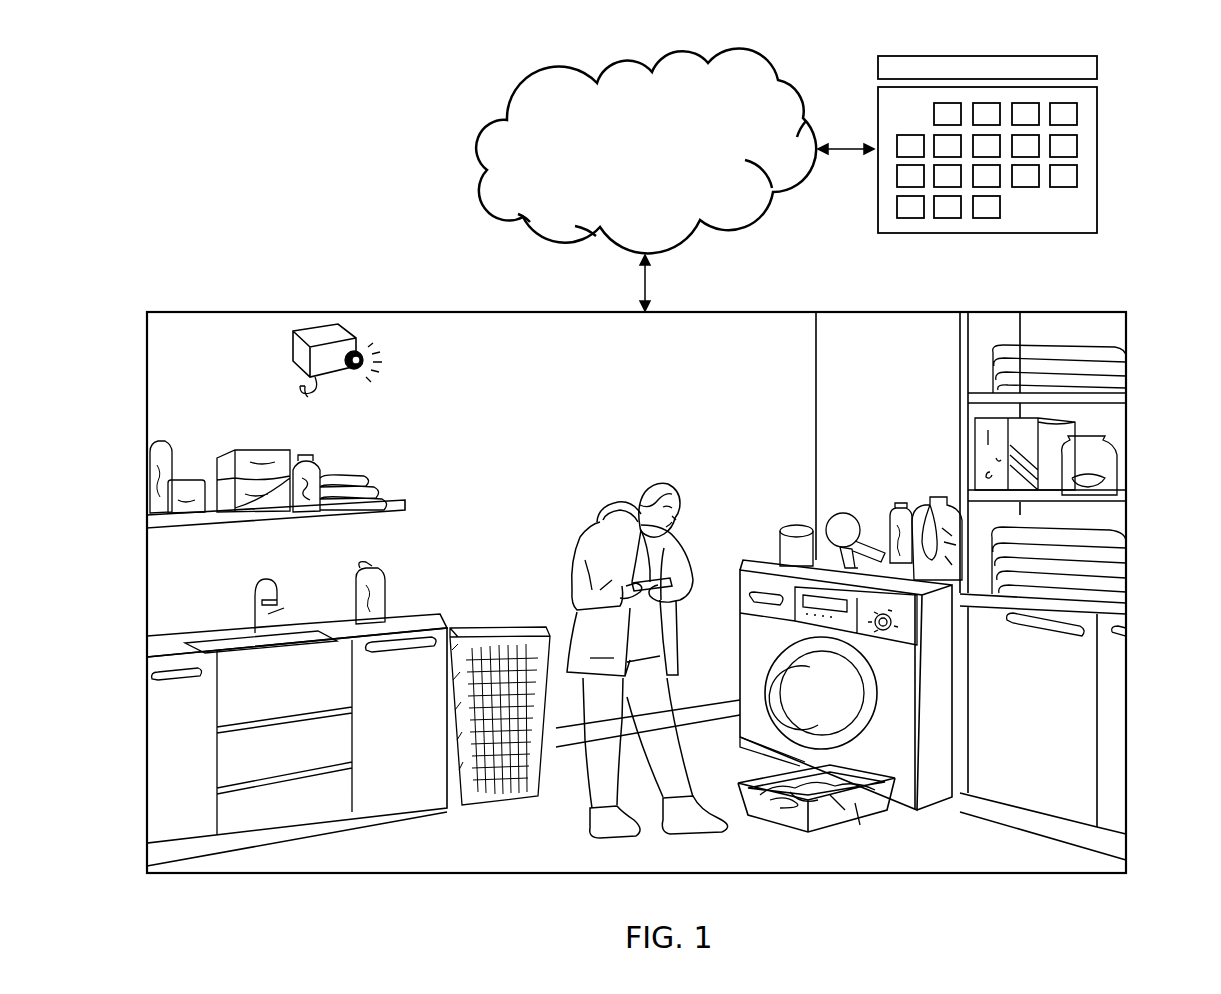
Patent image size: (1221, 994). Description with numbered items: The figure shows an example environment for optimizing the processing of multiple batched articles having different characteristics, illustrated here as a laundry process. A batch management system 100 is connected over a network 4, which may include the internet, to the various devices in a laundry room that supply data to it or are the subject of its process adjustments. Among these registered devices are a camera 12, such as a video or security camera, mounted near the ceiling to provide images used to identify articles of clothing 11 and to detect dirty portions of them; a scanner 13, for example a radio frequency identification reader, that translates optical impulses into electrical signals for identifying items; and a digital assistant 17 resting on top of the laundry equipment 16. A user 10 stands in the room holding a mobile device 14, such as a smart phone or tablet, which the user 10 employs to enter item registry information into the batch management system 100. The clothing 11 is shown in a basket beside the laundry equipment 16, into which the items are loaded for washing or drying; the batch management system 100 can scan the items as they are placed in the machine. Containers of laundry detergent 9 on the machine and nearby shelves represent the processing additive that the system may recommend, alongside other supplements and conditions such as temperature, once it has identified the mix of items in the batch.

The network 4 is at (729, 158).
The batch management system 100 is at (1097, 147).
The camera 12 is at (325, 345).
The mobile device 14 is at (668, 560).
The digital assistant 17 is at (797, 527).
The scanner 13 is at (842, 530).
The laundry detergent 9 is at (938, 517).
The user 10 is at (647, 660).
The clothing 11 is at (872, 812).
The laundry equipment 16 is at (890, 742).